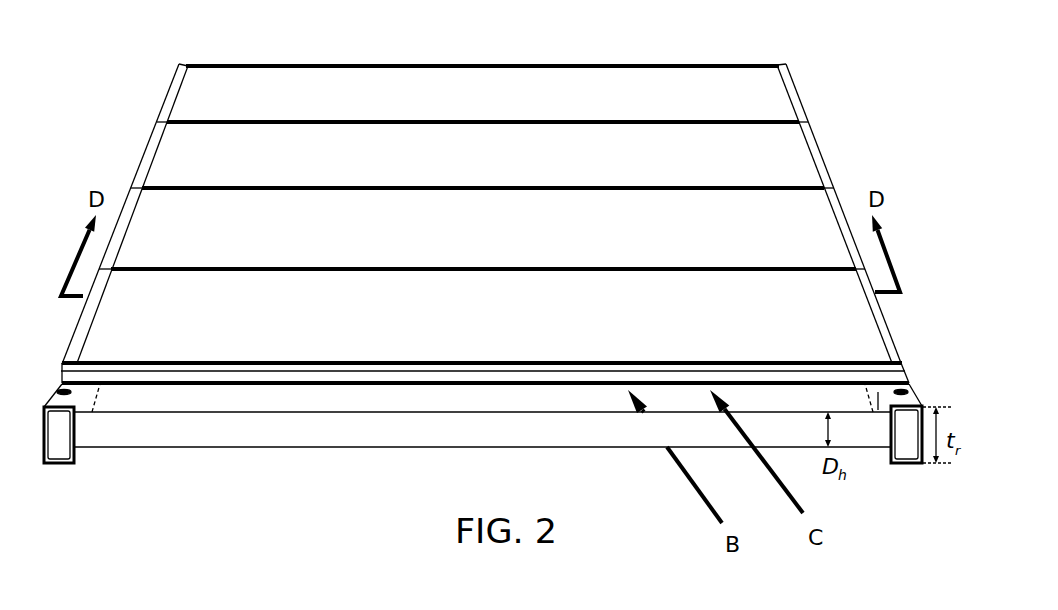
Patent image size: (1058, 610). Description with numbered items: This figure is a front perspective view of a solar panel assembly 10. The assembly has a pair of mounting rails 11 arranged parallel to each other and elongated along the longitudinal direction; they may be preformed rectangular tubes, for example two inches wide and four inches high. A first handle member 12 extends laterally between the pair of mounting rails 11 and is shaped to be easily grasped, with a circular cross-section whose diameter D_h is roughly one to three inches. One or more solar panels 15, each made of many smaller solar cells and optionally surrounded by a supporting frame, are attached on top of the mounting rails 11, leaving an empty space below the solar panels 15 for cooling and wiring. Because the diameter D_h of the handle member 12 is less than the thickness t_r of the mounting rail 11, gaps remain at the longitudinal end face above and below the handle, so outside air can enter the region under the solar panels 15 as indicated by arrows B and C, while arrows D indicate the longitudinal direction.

The solar panel assembly 10 is at (118, 88).
The mounting rail 11 is at (57, 464).
The first handle member 12 is at (195, 425).
The solar panel 15 is at (492, 322).